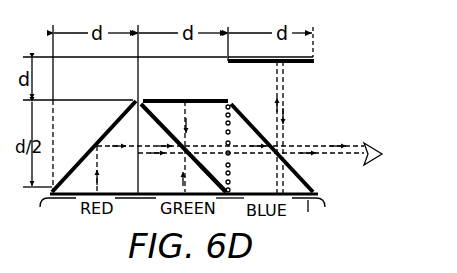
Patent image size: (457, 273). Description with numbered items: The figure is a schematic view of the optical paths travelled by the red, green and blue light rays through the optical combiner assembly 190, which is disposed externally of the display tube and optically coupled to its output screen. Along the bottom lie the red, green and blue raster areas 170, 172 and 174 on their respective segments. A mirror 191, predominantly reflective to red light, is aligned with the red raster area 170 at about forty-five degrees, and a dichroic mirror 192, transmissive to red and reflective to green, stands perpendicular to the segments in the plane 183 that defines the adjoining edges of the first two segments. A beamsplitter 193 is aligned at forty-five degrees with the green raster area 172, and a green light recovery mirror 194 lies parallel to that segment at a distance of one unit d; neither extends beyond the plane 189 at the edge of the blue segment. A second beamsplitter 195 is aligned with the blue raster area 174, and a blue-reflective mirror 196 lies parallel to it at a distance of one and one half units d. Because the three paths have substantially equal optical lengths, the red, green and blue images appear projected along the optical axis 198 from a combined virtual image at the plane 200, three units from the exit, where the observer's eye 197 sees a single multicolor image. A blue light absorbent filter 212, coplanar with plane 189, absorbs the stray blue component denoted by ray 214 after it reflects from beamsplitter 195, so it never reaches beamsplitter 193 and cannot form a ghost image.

The optical combiner assembly 190 is at (355, 62).
The mirror 191 is at (110, 128).
The dichroic mirror 192 is at (183, 136).
The beamsplitter 193 is at (213, 165).
The green light recovery mirror 194 is at (182, 100).
The second beamsplitter 195 is at (237, 108).
The mirror 196 is at (299, 65).
The observer's eye 197 is at (366, 161).
The optical axis 198 is at (335, 145).
The plane 200 is at (56, 123).
The ray 214 is at (207, 146).
The raster area 170 is at (117, 186).
The raster area 172 is at (155, 193).
The raster area 174 is at (233, 151).
The blue light absorbent filter 212 is at (233, 172).
The plane 183 is at (136, 204).
The plane 189 is at (227, 204).